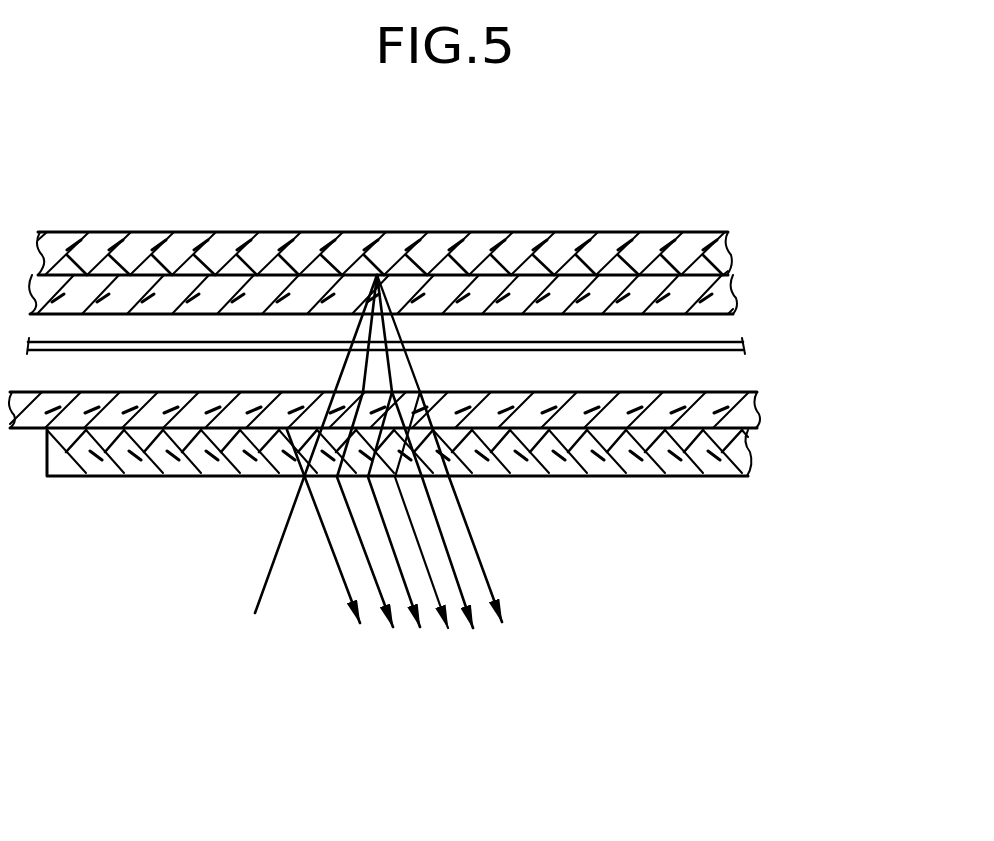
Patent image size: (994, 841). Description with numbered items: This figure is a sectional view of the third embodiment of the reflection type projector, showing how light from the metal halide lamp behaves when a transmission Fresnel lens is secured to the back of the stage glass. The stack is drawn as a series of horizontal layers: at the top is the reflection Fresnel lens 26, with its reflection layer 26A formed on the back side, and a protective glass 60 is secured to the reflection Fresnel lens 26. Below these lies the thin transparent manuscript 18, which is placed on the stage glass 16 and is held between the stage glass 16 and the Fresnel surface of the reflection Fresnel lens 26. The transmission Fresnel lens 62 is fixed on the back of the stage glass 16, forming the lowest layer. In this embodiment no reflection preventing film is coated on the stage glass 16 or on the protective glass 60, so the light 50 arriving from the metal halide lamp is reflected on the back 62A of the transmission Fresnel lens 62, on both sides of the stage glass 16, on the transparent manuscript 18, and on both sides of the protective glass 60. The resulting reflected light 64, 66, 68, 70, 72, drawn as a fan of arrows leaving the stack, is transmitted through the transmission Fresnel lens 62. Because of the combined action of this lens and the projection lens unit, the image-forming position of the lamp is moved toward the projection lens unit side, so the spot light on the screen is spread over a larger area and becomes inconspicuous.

The stage glass 16 is at (756, 408).
The transparent manuscript 18 is at (744, 340).
The reflection Fresnel lens 26 is at (728, 248).
The reflection layer 26A is at (479, 234).
The light 50 is at (281, 540).
The protective glass 60 is at (734, 281).
The transmission Fresnel lens 62 is at (747, 449).
The back of the transmission Fresnel lens 62A is at (118, 478).
The light 64 is at (363, 573).
The light 66 is at (402, 572).
The light 68 is at (422, 563).
The light 70 is at (445, 563).
The light 72 is at (474, 541).